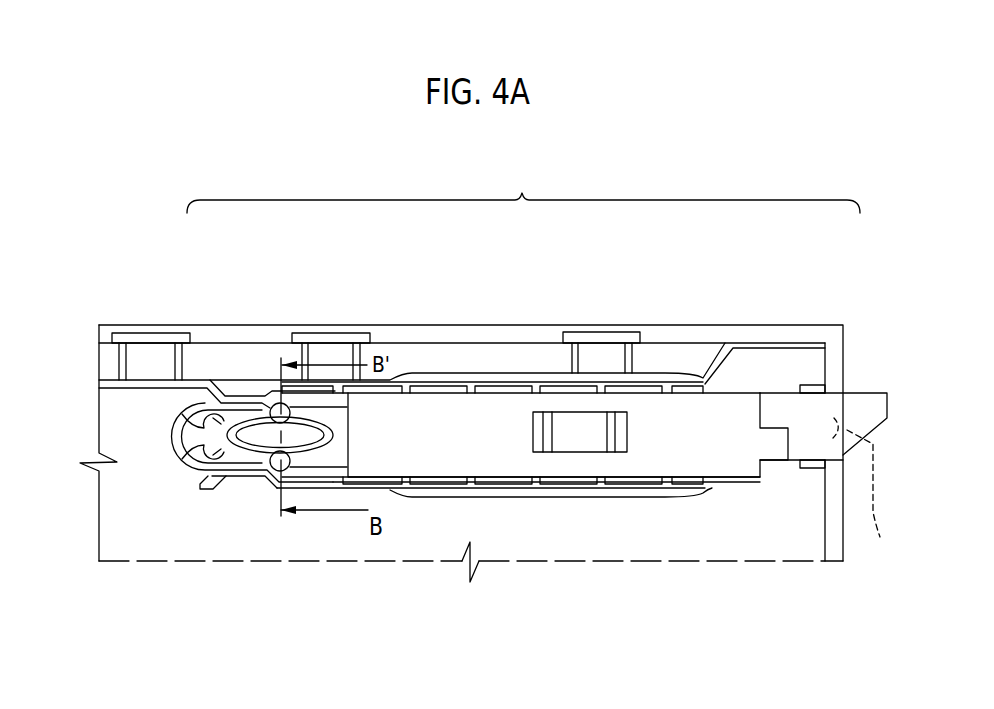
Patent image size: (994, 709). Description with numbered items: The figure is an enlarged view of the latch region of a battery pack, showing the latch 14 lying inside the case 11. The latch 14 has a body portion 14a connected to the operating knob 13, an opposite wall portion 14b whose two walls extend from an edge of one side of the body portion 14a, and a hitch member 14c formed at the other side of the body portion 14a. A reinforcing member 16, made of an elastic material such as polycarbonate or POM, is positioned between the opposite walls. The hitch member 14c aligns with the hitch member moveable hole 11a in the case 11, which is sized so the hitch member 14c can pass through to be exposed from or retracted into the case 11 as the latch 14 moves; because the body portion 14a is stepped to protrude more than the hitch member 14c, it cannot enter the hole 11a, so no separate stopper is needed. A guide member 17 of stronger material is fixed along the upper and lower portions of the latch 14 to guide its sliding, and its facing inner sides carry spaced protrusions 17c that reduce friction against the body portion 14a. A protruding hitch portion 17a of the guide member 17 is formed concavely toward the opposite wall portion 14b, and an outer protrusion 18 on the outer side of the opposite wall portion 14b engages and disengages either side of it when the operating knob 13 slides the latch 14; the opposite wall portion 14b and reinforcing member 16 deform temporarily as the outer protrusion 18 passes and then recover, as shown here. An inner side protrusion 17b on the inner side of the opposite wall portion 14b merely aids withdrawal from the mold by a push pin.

The case 11 is at (683, 540).
The hitch member moveable hole 11a is at (868, 490).
The operating knob 13 is at (612, 497).
The latch 14 is at (523, 188).
The body portion 14a is at (440, 430).
The opposite wall portion 14b is at (242, 402).
The hitch member 14c is at (863, 413).
The reinforcing member 16 is at (322, 403).
The guide member 17 is at (318, 485).
The protruding hitch portion 17a is at (245, 473).
The inner side protrusion 17b is at (187, 439).
The protrusion 17c is at (470, 388).
The outer protrusion 18 is at (267, 402).